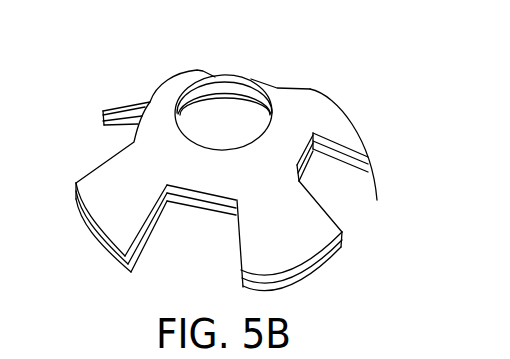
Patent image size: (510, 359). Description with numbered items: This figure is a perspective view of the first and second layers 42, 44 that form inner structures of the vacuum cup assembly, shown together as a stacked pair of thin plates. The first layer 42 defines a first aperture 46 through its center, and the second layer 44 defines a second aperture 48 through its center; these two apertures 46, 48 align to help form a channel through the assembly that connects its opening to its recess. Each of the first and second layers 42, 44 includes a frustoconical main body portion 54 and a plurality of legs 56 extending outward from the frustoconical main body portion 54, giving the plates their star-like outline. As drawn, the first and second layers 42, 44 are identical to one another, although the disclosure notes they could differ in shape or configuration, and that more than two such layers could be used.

The first layer 42 is at (327, 118).
The second layer 44 is at (343, 162).
The first aperture 46 is at (220, 86).
The second aperture 48 is at (233, 113).
The frustoconical main body portion 54 is at (198, 211).
The legs 56 is at (128, 112).